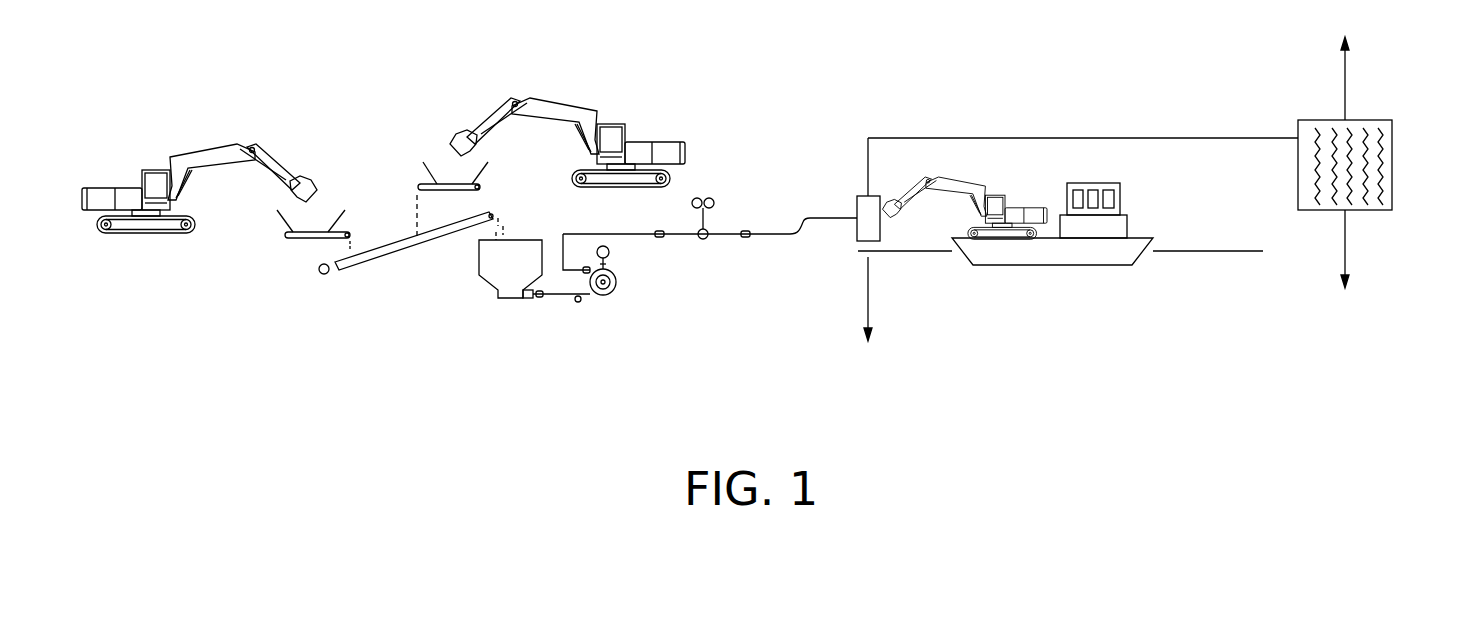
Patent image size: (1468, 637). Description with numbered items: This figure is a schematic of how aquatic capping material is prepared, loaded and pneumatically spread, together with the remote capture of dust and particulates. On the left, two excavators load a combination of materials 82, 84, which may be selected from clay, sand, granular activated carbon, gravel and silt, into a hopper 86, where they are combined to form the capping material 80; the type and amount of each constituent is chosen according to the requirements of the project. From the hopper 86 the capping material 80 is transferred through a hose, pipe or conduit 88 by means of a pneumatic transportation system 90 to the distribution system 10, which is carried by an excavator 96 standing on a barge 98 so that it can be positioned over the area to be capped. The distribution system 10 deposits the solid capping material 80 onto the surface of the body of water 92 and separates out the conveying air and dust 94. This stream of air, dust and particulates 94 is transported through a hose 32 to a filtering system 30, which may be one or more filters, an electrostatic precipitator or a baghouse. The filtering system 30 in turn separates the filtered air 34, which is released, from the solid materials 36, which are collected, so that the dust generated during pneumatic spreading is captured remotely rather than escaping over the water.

The distribution system 10 is at (857, 212).
The filtering system 30 is at (1393, 138).
The hose 32 is at (1013, 137).
The filtered air 34 is at (1348, 85).
The solid materials 36 is at (1348, 243).
The capping material 80 is at (868, 290).
The material 82 is at (356, 240).
The material 84 is at (417, 203).
The hopper 86 is at (485, 282).
The hose, pipe or conduit 88 is at (777, 238).
The pneumatic transportation system 90 is at (617, 294).
The body of water 92 is at (1197, 252).
The air and dust 94 is at (868, 197).
The excavator 96 is at (1032, 207).
The barge 98 is at (1040, 266).